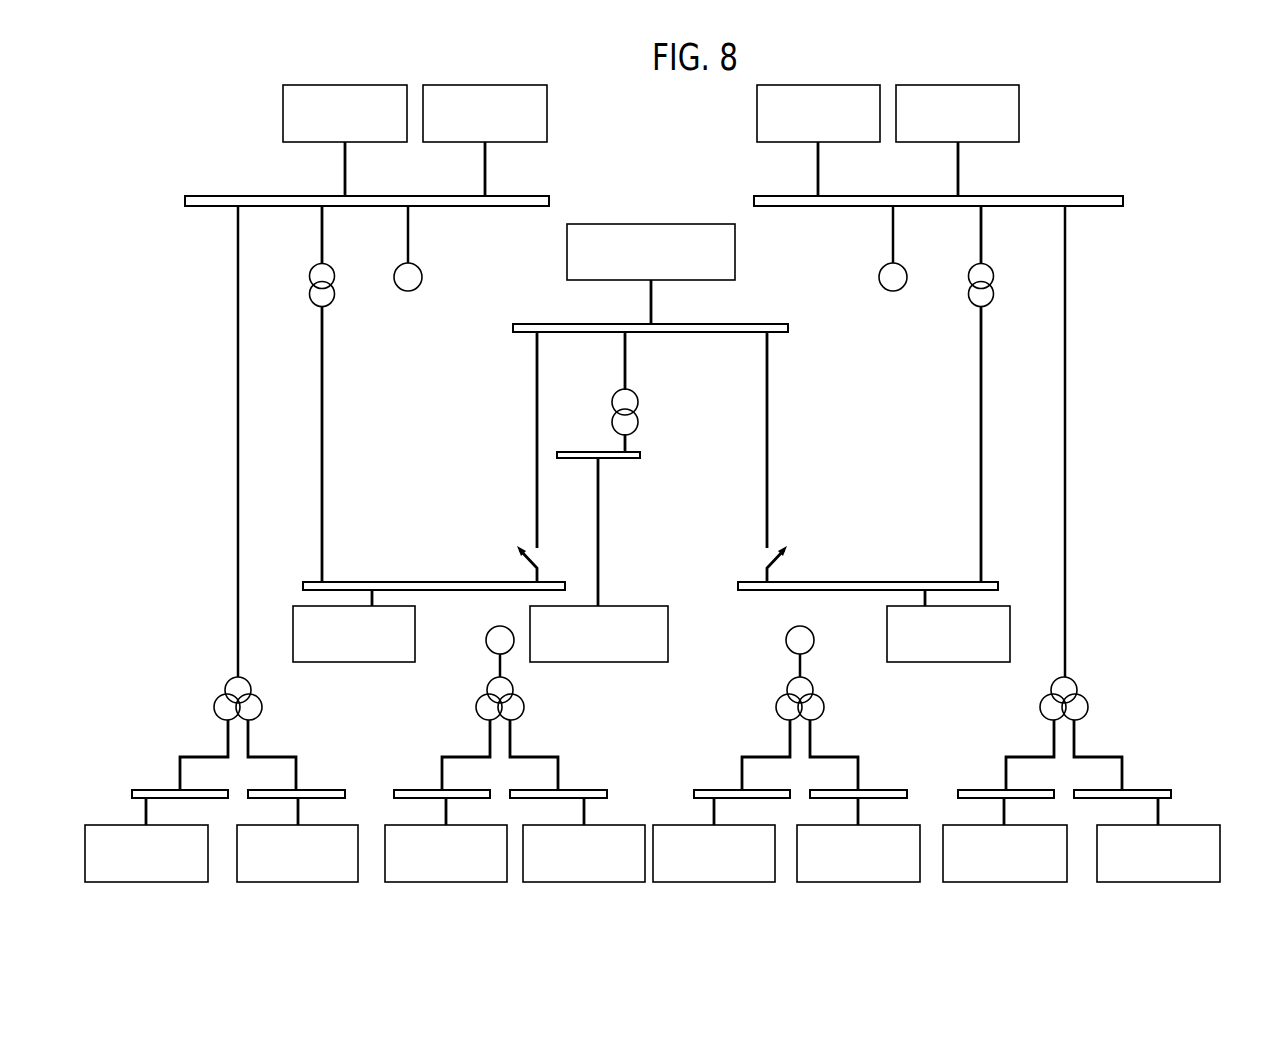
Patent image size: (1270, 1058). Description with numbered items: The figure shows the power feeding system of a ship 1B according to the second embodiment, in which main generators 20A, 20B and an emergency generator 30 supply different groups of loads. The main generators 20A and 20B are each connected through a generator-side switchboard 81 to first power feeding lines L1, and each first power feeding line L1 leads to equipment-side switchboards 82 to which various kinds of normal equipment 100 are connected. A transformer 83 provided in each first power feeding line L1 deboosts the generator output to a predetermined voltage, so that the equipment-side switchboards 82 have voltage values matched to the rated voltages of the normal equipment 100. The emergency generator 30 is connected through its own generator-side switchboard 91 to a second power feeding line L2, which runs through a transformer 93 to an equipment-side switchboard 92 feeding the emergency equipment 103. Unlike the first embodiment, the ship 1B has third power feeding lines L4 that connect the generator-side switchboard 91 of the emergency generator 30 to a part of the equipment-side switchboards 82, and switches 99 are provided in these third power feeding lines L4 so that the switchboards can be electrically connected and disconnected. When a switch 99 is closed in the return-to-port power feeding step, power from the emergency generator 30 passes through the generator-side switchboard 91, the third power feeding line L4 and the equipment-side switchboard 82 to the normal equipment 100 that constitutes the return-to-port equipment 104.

The ship 1B is at (669, 509).
The main generator 20A is at (312, 143).
The main generator 20B is at (788, 143).
The emergency generator 30 is at (628, 224).
The generator-side switchboard 81 is at (185, 196).
The equipment-side switchboard 82 is at (455, 582).
The transformer 83 is at (335, 298).
The generator-side switchboard 91 is at (730, 323).
The equipment-side switchboard 92 is at (598, 452).
The transformer 93 is at (640, 410).
The switch 99 is at (520, 560).
The normal equipment 100 is at (652, 737).
The return-to-port equipment 104 is at (992, 607).
The emergency equipment 103 is at (610, 662).
The first power feeding line L1 is at (408, 240).
The second power feeding line L2 is at (625, 375).
The third power feeding line L4 is at (537, 468).